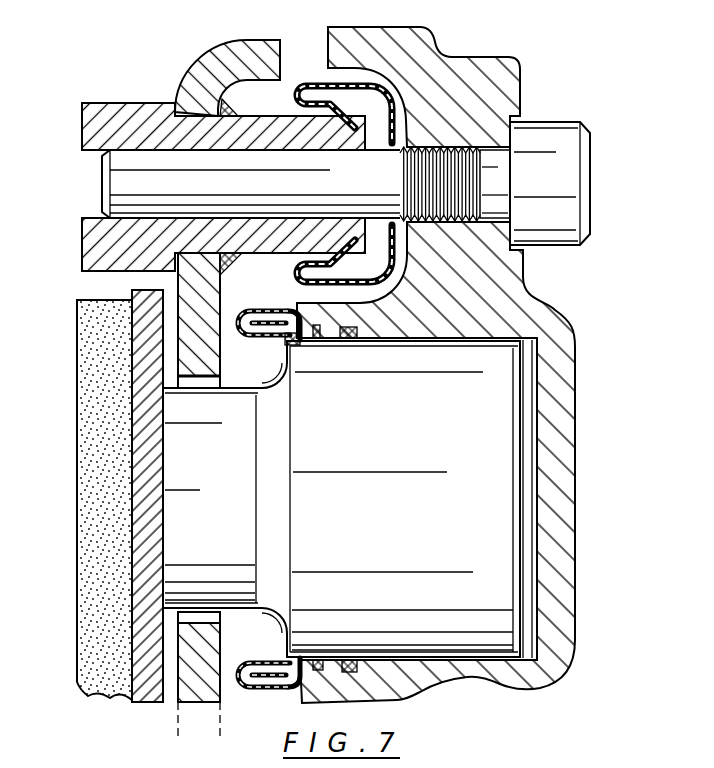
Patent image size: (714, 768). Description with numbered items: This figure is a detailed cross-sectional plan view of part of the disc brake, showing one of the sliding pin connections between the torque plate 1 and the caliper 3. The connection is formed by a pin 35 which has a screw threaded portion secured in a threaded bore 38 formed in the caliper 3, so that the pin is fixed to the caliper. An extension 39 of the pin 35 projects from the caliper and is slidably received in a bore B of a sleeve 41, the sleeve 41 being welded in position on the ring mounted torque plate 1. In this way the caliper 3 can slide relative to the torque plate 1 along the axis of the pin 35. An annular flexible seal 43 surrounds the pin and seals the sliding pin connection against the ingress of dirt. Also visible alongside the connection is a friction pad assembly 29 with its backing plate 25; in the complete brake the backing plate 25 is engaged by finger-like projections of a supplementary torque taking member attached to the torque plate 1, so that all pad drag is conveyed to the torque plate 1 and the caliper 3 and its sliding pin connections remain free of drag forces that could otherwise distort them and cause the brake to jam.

The torque plate 1 is at (185, 283).
The caliper 3 is at (557, 567).
The backing plate 25 is at (147, 673).
The friction pad assembly 29 is at (98, 514).
The pin 35 is at (553, 210).
The threaded bore 38 is at (461, 150).
The extension of the pin 39 is at (188, 165).
The sleeve 41 is at (100, 135).
The annular flexible seal 43 is at (323, 80).
The bore B is at (234, 152).